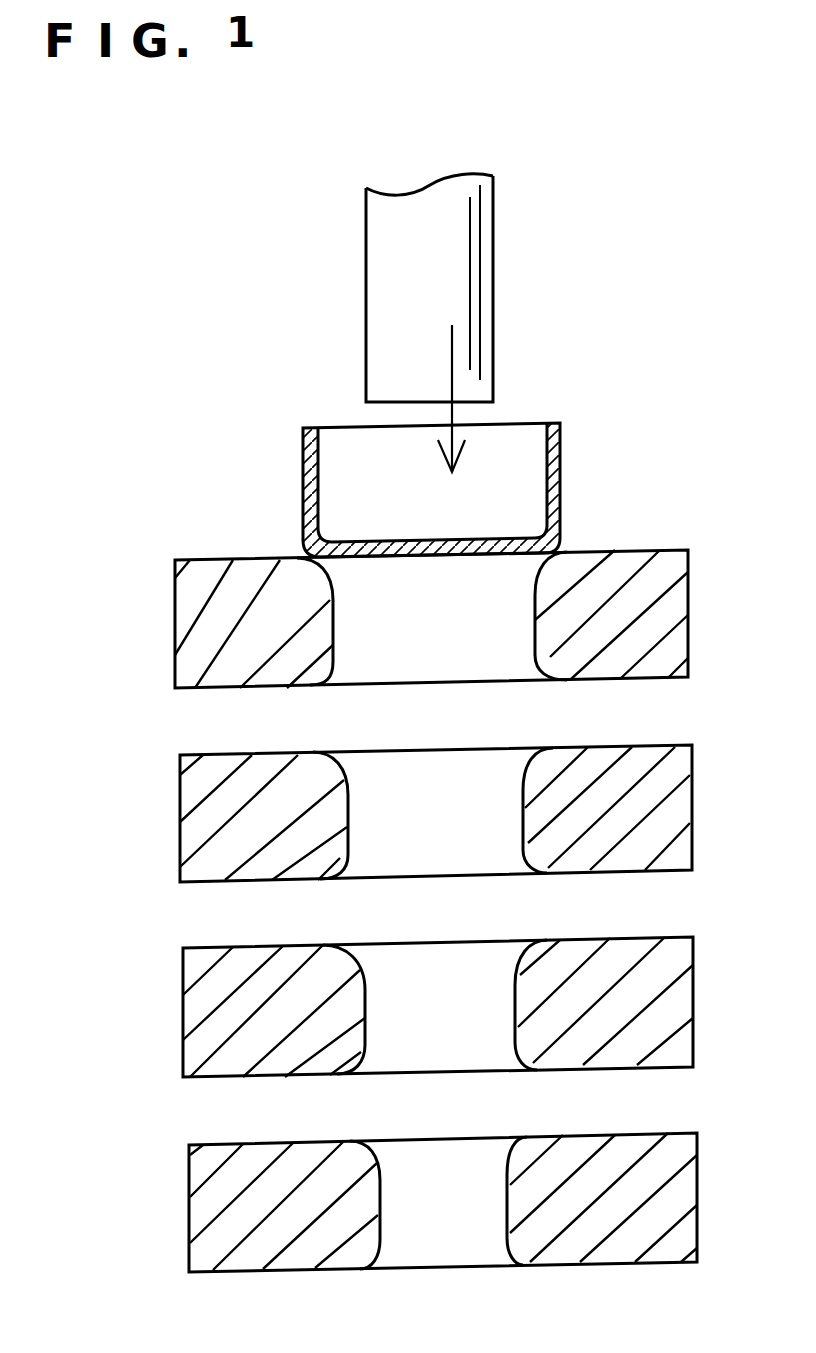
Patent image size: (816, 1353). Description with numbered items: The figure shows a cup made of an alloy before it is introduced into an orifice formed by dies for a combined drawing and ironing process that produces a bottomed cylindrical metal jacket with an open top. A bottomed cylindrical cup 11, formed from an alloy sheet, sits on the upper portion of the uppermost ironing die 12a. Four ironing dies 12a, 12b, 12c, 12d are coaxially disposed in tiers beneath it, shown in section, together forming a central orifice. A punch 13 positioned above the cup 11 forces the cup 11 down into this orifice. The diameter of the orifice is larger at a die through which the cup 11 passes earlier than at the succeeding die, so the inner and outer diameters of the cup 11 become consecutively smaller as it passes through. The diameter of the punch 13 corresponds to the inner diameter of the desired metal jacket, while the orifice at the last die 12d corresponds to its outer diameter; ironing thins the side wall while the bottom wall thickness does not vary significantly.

The bottomed cylindrical cup 11 is at (560, 447).
The ironing die 12a is at (195, 614).
The ironing die 12b is at (200, 818).
The ironing die 12c is at (200, 1013).
The ironing die 12d is at (205, 1208).
The punch 13 is at (448, 256).